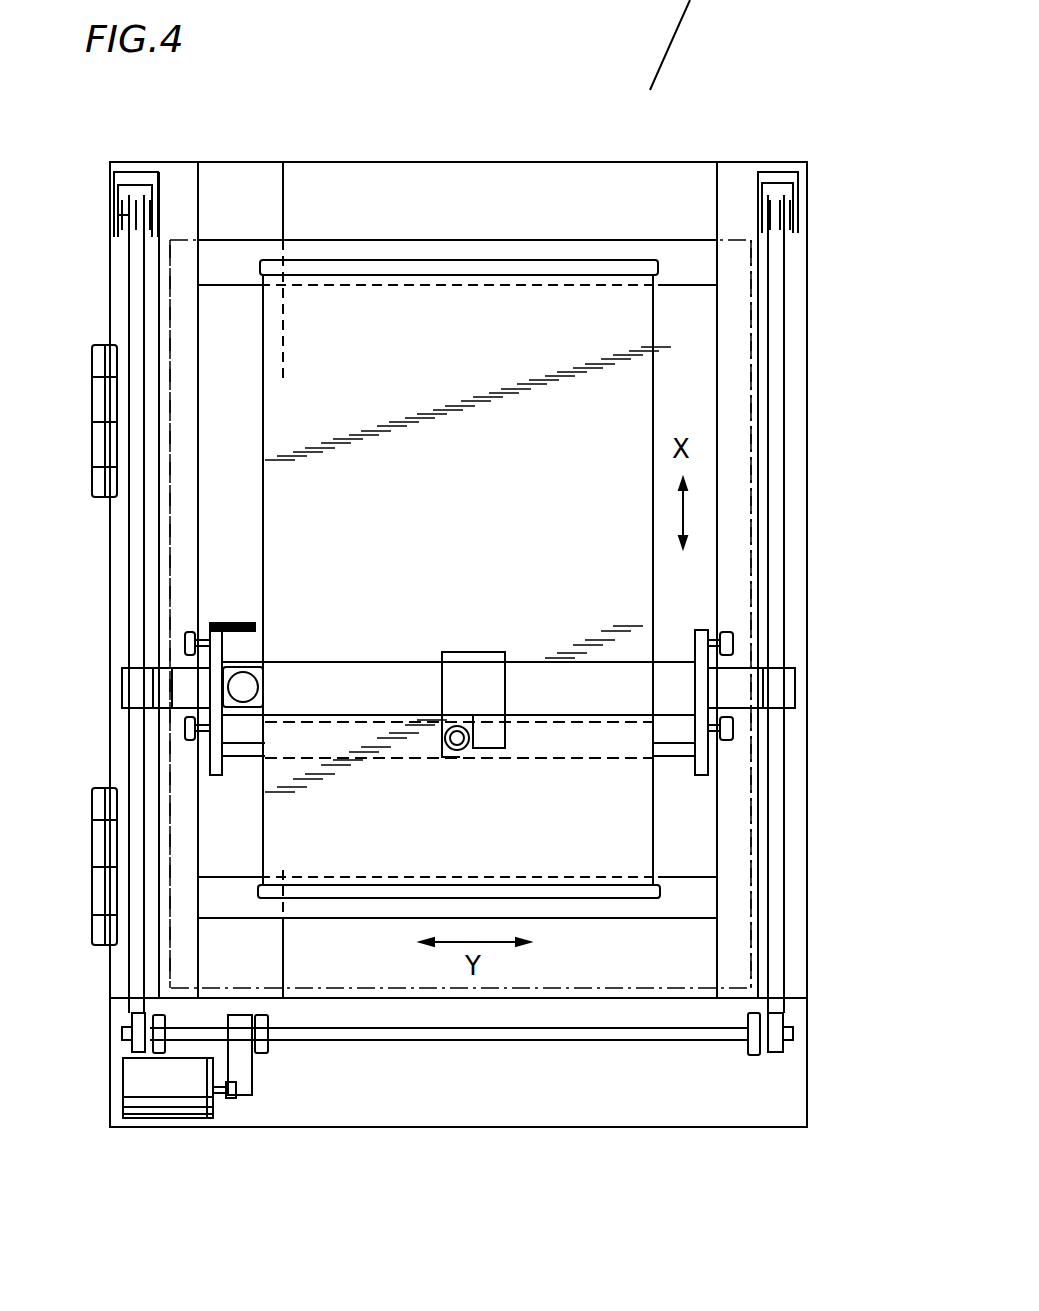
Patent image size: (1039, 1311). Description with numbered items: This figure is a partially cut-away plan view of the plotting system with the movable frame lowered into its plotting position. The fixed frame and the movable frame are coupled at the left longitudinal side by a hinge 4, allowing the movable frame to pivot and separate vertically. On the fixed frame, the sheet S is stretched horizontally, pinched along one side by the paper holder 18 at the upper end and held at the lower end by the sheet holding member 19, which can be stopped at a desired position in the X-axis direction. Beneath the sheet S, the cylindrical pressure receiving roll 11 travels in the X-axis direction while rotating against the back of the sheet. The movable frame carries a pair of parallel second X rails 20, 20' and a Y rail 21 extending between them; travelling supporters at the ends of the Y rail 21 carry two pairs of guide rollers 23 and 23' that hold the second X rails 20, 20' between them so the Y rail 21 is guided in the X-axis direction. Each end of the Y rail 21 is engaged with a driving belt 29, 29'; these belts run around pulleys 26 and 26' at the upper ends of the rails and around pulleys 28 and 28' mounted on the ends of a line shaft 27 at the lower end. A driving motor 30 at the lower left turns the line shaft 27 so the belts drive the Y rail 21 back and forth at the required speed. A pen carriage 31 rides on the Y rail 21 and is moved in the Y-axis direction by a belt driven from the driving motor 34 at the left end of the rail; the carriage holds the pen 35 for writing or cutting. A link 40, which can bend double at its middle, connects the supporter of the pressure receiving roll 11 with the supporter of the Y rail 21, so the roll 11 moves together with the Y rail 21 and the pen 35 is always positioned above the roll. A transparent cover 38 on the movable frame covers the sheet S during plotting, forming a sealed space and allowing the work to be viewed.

The hinge 4 is at (92, 490).
The pressure receiving roll 11 is at (580, 748).
The paper holder 18 is at (597, 268).
The sheet holding member 19 is at (703, 902).
The second X rail 20 is at (112, 614).
The second X rail 20' is at (792, 619).
The Y rail 21 is at (342, 677).
The guide rollers 23 is at (131, 682).
The guide rollers 23' is at (785, 682).
The pulley 26 is at (109, 190).
The pulley 26' is at (815, 187).
The line shaft 27 is at (303, 1040).
The pulley 28 is at (152, 1055).
The pulley 28' is at (815, 1040).
The driving belt 29 is at (104, 592).
The driving belt 29' is at (813, 592).
The driving motor 30 is at (185, 1105).
The pen carriage 31 is at (470, 652).
The driving motor 34 is at (263, 665).
The pen 35 is at (459, 750).
The transparent cover 38 is at (752, 348).
The link 40 is at (232, 620).
The sheet S is at (507, 410).